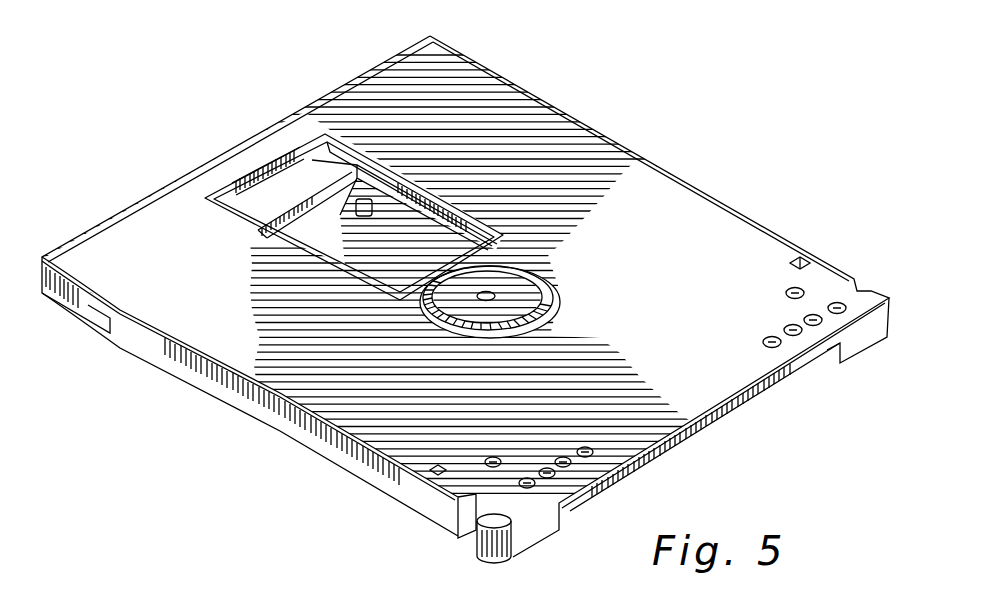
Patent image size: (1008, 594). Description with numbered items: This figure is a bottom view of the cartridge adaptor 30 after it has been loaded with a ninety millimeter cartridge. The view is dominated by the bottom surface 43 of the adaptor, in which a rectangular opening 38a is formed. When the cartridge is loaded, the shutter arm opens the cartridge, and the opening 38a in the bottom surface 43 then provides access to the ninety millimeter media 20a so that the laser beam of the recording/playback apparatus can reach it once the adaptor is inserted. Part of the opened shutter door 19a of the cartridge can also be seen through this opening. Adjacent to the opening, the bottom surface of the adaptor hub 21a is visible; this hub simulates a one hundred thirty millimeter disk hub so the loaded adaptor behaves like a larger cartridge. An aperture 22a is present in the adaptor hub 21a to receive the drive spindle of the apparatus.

The cartridge adaptor 30 is at (470, 291).
The bottom surface 43 is at (468, 66).
The opening 38a is at (288, 186).
The shutter door 19a is at (409, 206).
The media 20a is at (432, 250).
The adaptor hub 21a is at (523, 317).
The aperture 22a is at (496, 298).